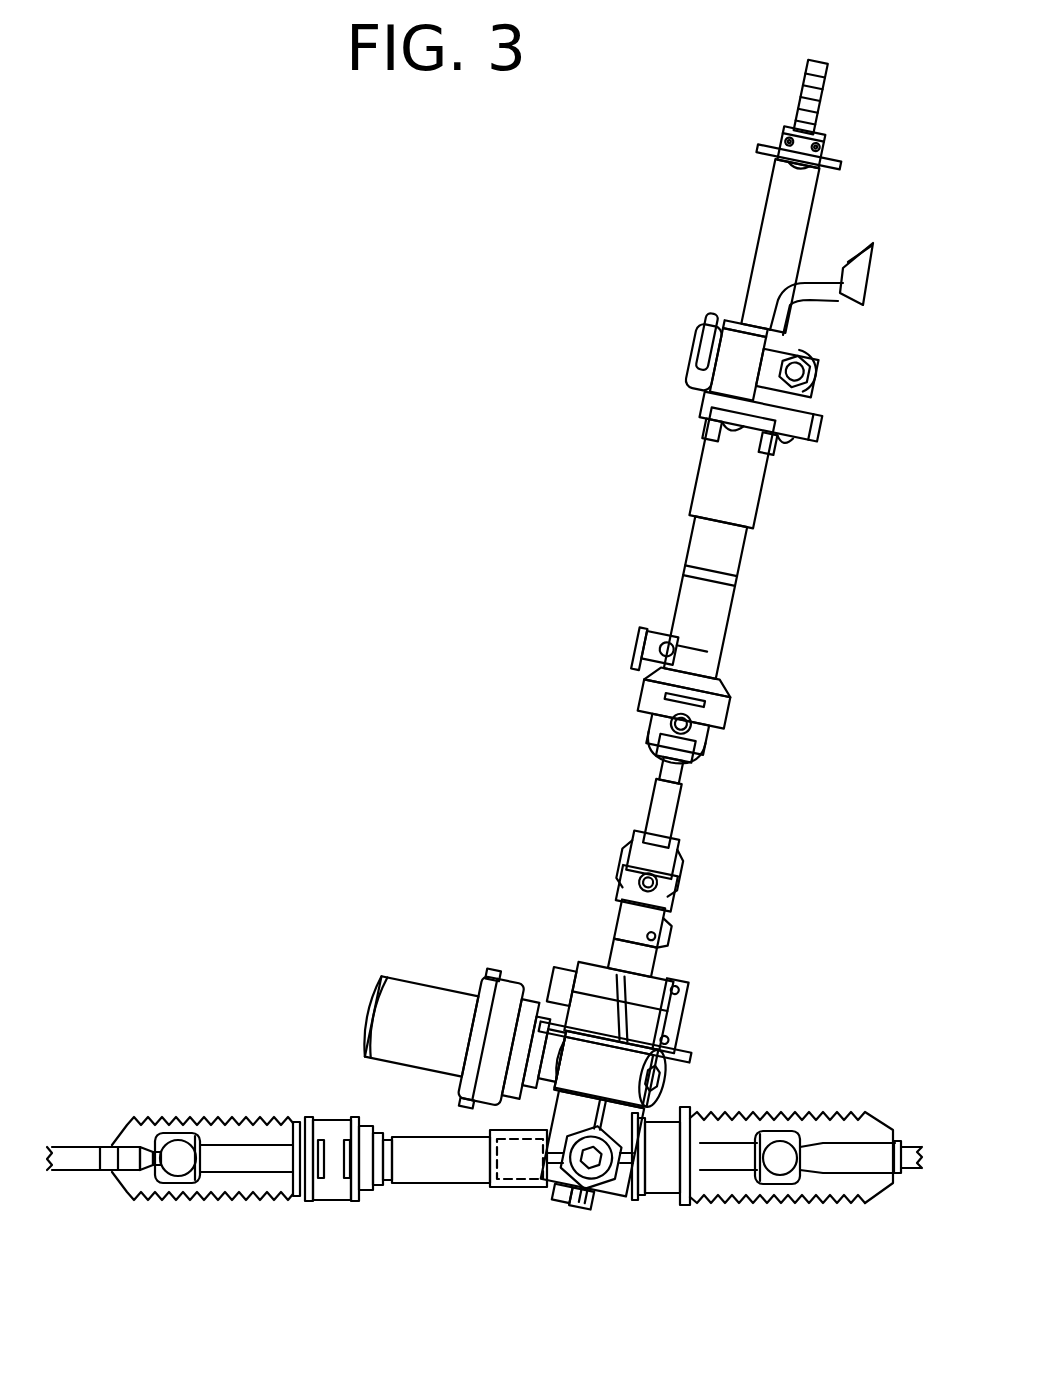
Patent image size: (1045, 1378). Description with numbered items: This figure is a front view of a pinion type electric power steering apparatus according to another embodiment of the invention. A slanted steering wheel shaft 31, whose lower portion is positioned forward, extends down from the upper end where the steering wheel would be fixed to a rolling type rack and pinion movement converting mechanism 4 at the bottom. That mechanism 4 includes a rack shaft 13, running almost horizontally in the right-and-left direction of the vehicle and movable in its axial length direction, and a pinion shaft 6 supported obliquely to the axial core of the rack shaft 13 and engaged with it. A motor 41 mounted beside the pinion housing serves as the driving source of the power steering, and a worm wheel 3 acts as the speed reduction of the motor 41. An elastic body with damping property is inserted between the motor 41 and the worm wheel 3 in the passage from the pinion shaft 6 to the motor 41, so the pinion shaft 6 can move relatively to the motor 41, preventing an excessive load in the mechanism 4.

The steering wheel shaft 31 is at (808, 64).
The motor 41 is at (427, 987).
The worm wheel 3 is at (690, 1047).
The pinion shaft 6 is at (655, 1103).
The rack shaft 13 is at (447, 1168).
The rack and pinion movement converting mechanism 4 is at (607, 1213).